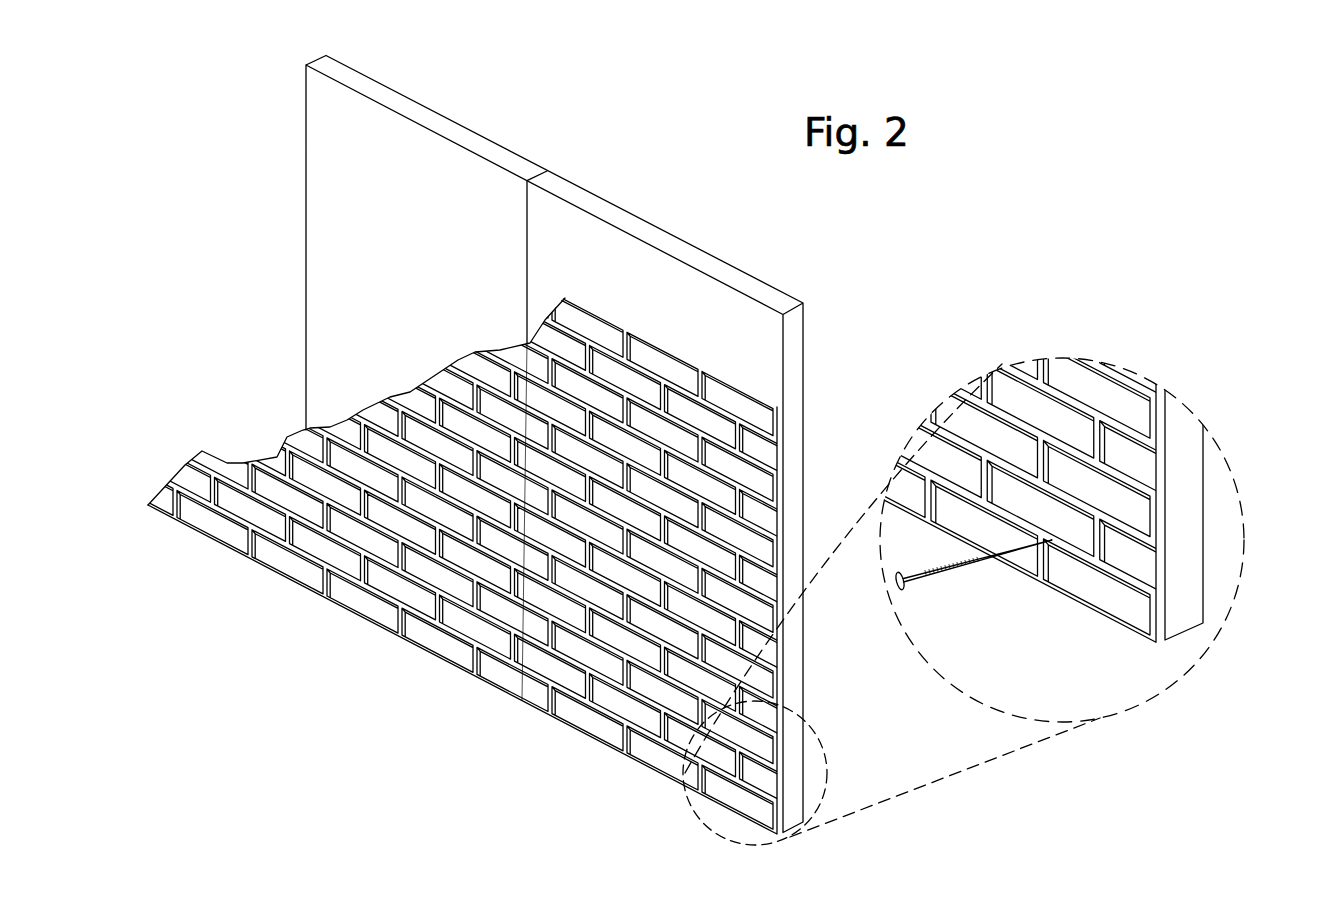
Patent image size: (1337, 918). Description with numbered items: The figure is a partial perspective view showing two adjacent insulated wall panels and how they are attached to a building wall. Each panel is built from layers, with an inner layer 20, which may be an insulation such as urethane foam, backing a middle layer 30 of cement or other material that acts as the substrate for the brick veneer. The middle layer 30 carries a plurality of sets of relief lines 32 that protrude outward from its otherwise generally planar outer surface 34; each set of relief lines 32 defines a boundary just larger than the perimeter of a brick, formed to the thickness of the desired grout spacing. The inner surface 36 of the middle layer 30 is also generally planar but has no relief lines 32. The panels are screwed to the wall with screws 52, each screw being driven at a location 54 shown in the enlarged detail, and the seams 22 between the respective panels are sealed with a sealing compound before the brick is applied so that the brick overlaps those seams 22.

The inner layer 20 is at (330, 228).
The seams 22 is at (523, 223).
The middle layer 30 is at (1172, 622).
The relief lines 32 is at (337, 543).
The outer surface 34 is at (382, 548).
The inner surface 36 is at (1172, 468).
The screws 52 is at (957, 567).
The fastener receiving joint 54 is at (1052, 542).